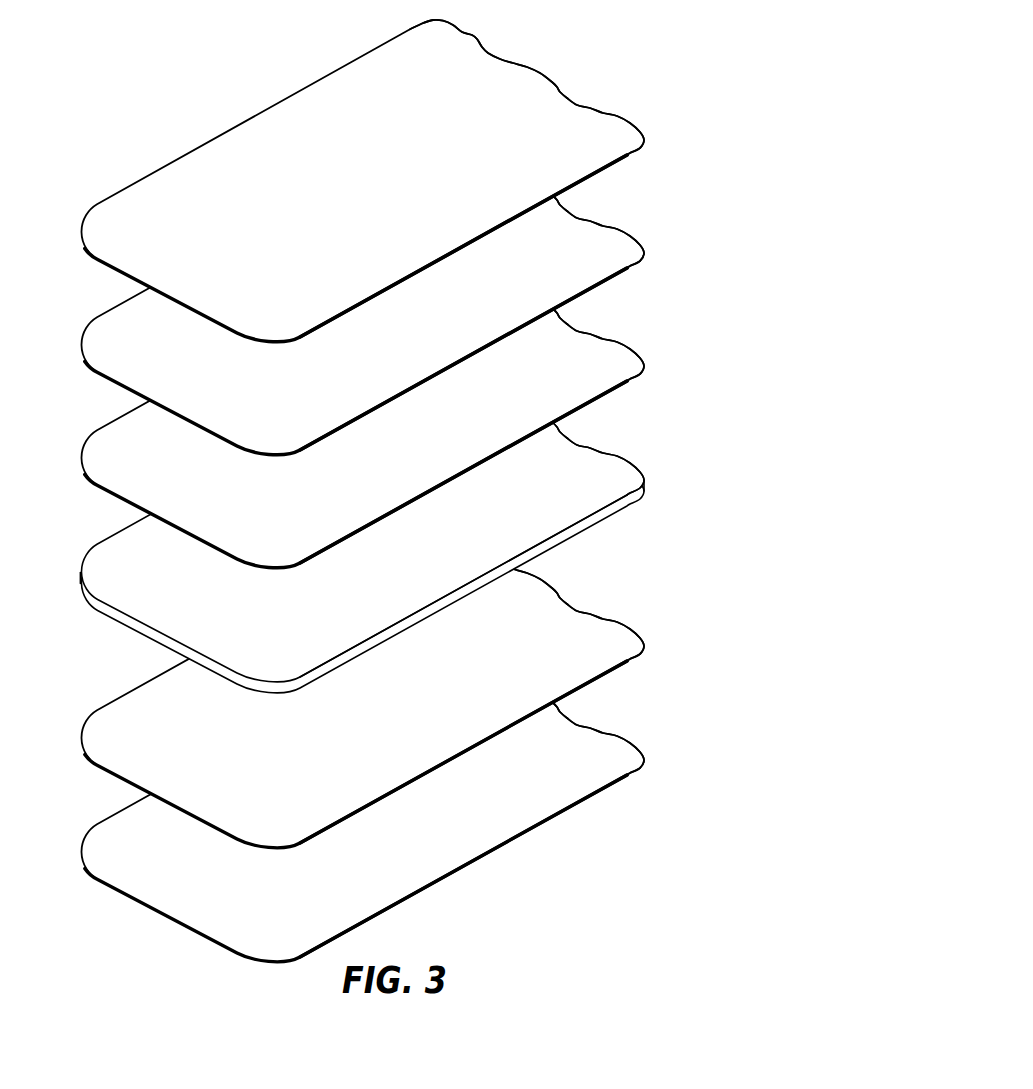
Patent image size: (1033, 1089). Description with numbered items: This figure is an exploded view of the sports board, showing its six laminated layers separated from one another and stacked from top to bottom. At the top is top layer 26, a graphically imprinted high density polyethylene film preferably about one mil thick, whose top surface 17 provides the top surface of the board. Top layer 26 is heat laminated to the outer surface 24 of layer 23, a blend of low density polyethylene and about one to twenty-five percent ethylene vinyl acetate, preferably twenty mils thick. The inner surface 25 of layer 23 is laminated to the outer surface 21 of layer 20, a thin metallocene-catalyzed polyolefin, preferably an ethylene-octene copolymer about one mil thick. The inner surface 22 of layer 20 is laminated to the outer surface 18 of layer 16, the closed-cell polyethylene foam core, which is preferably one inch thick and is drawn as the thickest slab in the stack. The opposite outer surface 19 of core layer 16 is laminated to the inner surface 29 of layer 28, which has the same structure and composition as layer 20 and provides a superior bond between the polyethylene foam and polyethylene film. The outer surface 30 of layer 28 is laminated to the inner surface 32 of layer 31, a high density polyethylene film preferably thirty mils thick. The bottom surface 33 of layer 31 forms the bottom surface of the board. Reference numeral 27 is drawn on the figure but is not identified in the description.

The core layer 16 is at (628, 457).
The top surface 17 is at (333, 242).
The outer surface 18 is at (408, 586).
The outer surface 19 is at (603, 521).
The metallocene-catalyzed polyolefin layer 20 is at (617, 343).
The outer surface 21 is at (308, 517).
The inner surface 22 is at (633, 378).
The low density polyethylene and ethylene vinyl acetate blend layer 23 is at (627, 230).
The outer surface 24 is at (387, 370).
The inner surface 25 is at (633, 266).
The top layer 26 is at (618, 115).
The top layer side surface 27 is at (633, 161).
The metallocene-catalyzed polyolefin layer 28 is at (627, 628).
The inner surface 29 is at (397, 737).
The outer surface 30 is at (633, 667).
The bottom polyethylene film layer 31 is at (630, 742).
The inner surface 32 is at (448, 849).
The bottom surface 33 is at (607, 785).